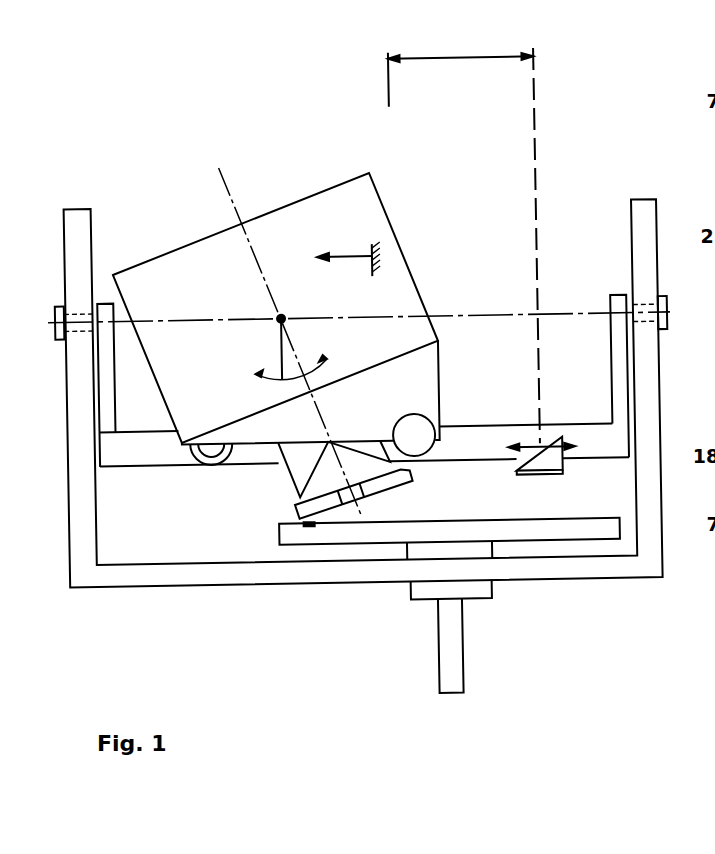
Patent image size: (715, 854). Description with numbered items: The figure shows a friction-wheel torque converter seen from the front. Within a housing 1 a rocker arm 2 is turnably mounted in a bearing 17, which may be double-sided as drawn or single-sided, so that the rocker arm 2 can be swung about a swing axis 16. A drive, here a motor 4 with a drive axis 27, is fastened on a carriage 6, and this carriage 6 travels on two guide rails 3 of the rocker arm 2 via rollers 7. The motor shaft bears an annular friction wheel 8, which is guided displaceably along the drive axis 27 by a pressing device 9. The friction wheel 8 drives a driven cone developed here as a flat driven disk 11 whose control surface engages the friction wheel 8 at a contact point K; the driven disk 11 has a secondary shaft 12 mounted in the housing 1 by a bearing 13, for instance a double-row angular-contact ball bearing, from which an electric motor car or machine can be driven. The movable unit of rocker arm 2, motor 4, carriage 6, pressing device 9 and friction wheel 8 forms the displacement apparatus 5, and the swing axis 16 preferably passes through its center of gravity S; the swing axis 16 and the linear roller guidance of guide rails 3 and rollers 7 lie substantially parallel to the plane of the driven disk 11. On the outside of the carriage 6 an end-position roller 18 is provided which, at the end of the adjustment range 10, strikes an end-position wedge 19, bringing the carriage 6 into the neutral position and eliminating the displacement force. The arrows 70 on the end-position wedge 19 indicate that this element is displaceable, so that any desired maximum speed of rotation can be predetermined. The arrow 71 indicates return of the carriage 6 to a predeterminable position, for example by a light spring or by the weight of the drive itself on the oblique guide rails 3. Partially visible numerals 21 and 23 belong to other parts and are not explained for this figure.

The housing 1 is at (80, 565).
The rocker arm 2 is at (108, 382).
The guide rails 3 is at (122, 440).
The motor 4 is at (318, 226).
The displacement apparatus 5 is at (134, 214).
The carriage 6 is at (392, 390).
The rollers 7 is at (216, 449).
The friction wheel 8 is at (344, 500).
The pressing device 9 is at (290, 456).
The adjustment range 10 is at (438, 60).
The driven disk 11 is at (506, 534).
The secondary shaft 12 is at (448, 670).
The bearing 13 is at (425, 589).
The swing axis 16 is at (475, 316).
The bearing 17 is at (57, 306).
The end-position roller 18 is at (414, 436).
The end-position wedge 19 is at (540, 468).
The element 21 is at (700, 181).
The element 23 is at (704, 381).
The drive axis 27 is at (237, 196).
The arrows 70 is at (574, 456).
The arrow 71 is at (348, 252).
The center of gravity S is at (283, 317).
The contact point K is at (298, 524).